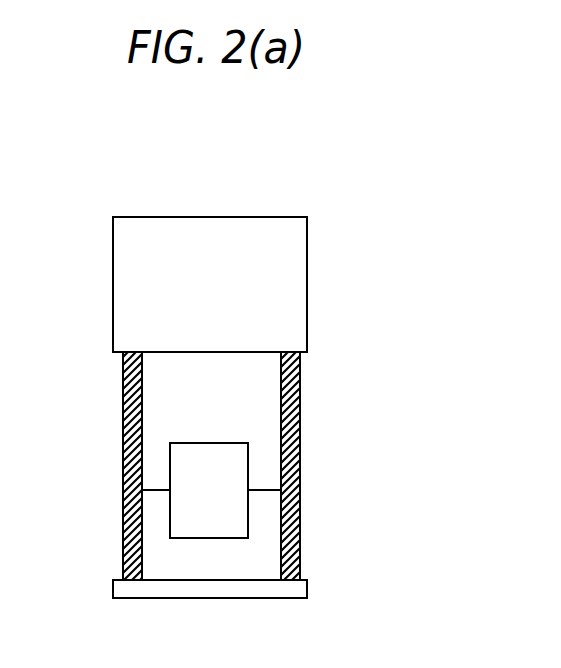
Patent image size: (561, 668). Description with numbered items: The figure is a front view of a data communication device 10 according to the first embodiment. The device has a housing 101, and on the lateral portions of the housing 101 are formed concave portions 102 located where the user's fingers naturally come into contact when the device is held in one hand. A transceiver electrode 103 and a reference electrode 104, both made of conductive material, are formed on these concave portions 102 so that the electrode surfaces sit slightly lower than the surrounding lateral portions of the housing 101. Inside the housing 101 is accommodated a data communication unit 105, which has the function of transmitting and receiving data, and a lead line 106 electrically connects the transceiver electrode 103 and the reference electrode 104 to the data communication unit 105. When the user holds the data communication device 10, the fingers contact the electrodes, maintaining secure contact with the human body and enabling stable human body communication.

The data communication device 10 is at (330, 192).
The housing 101 is at (307, 273).
The concave portions 102 is at (117, 343).
The transceiver electrode 103 is at (123, 435).
The reference electrode 104 is at (300, 463).
The data communication unit 105 is at (219, 450).
The lead line 106 is at (148, 490).